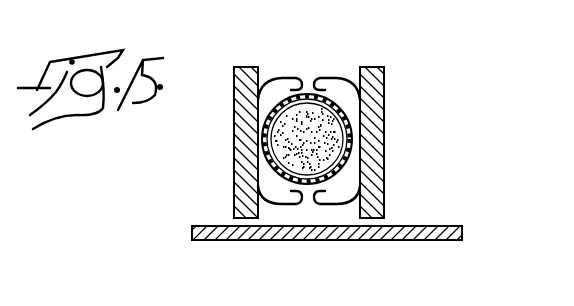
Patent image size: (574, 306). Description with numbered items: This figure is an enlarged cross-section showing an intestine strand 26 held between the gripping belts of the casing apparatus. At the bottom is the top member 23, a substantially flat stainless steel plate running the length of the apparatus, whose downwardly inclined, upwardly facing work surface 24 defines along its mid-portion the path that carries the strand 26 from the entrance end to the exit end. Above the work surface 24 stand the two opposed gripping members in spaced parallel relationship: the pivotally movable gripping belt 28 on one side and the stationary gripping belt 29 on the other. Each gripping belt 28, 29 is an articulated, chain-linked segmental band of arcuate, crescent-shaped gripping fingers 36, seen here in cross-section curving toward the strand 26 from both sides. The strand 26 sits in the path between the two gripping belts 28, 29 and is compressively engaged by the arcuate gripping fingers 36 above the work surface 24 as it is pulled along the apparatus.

The top member 23 is at (430, 240).
The work surface 24 is at (404, 226).
The strand 26 is at (308, 177).
The pivotally movable gripping belt 28 is at (234, 150).
The stationary gripping belt 29 is at (384, 117).
The gripping fingers 36 is at (320, 78).